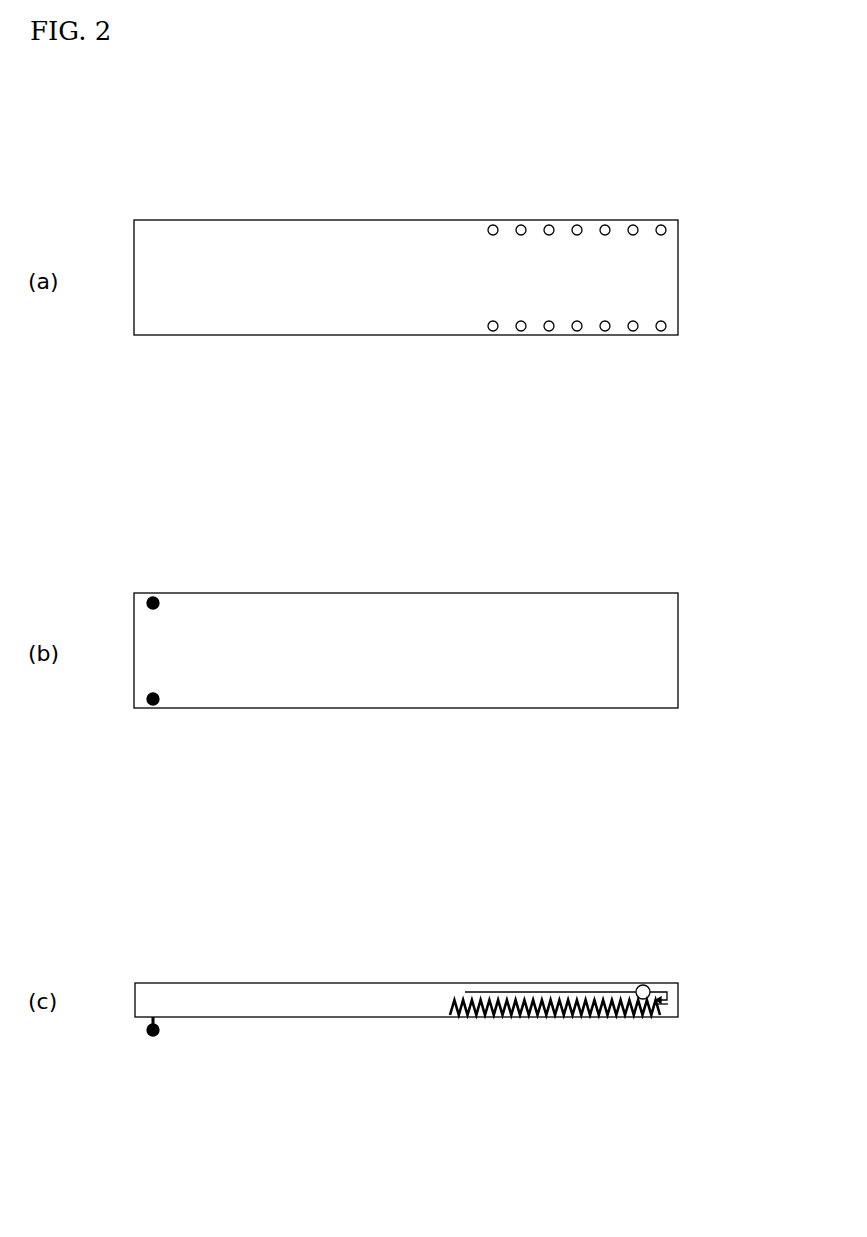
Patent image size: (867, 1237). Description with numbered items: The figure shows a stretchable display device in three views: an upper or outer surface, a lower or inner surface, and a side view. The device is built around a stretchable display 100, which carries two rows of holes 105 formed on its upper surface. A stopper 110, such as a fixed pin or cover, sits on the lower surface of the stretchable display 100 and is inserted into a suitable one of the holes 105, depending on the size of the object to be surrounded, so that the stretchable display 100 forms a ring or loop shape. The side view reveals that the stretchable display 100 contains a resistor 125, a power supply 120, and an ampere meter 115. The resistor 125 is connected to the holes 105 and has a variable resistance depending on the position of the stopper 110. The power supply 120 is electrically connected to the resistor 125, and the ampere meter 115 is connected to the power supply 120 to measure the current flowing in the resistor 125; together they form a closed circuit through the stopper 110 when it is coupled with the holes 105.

The stretchable display 100 is at (678, 286).
The holes 105 is at (493, 224).
The stopper 110 is at (152, 595).
The ampere meter 115 is at (641, 985).
The power supply 120 is at (668, 1011).
The resistor 125 is at (557, 1017).